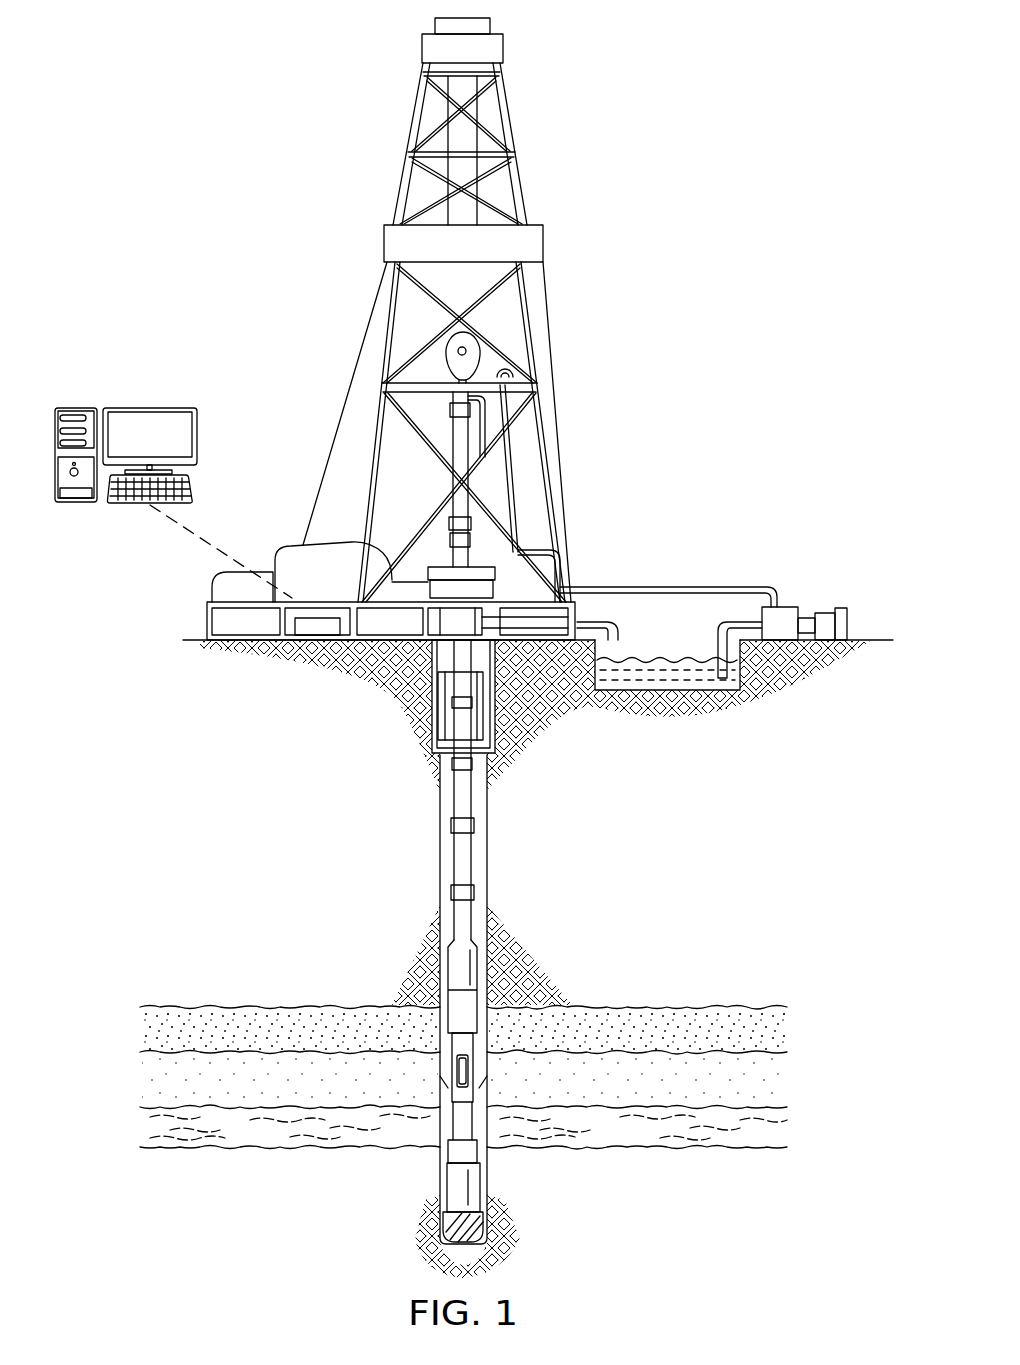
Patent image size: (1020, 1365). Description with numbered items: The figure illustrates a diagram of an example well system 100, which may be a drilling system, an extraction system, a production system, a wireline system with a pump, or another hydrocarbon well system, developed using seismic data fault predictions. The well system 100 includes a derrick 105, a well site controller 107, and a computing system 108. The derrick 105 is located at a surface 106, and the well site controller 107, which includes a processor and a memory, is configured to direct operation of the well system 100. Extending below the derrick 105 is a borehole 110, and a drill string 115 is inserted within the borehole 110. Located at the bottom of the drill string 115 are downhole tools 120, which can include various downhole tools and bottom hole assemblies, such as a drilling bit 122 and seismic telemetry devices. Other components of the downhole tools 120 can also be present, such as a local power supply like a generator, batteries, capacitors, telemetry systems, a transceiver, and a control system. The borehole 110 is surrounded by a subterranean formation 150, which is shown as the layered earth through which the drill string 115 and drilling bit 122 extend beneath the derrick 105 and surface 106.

The well system 100 is at (238, 121).
The derrick 105 is at (547, 413).
The surface 106 is at (870, 640).
The well site controller 107 is at (318, 626).
The computing system 108 is at (75, 408).
The borehole 110 is at (497, 705).
The drill string 115 is at (448, 970).
The downhole tools 120 is at (523, 1129).
The drilling bit 122 is at (442, 1220).
The subterranean formation 150 is at (802, 1034).